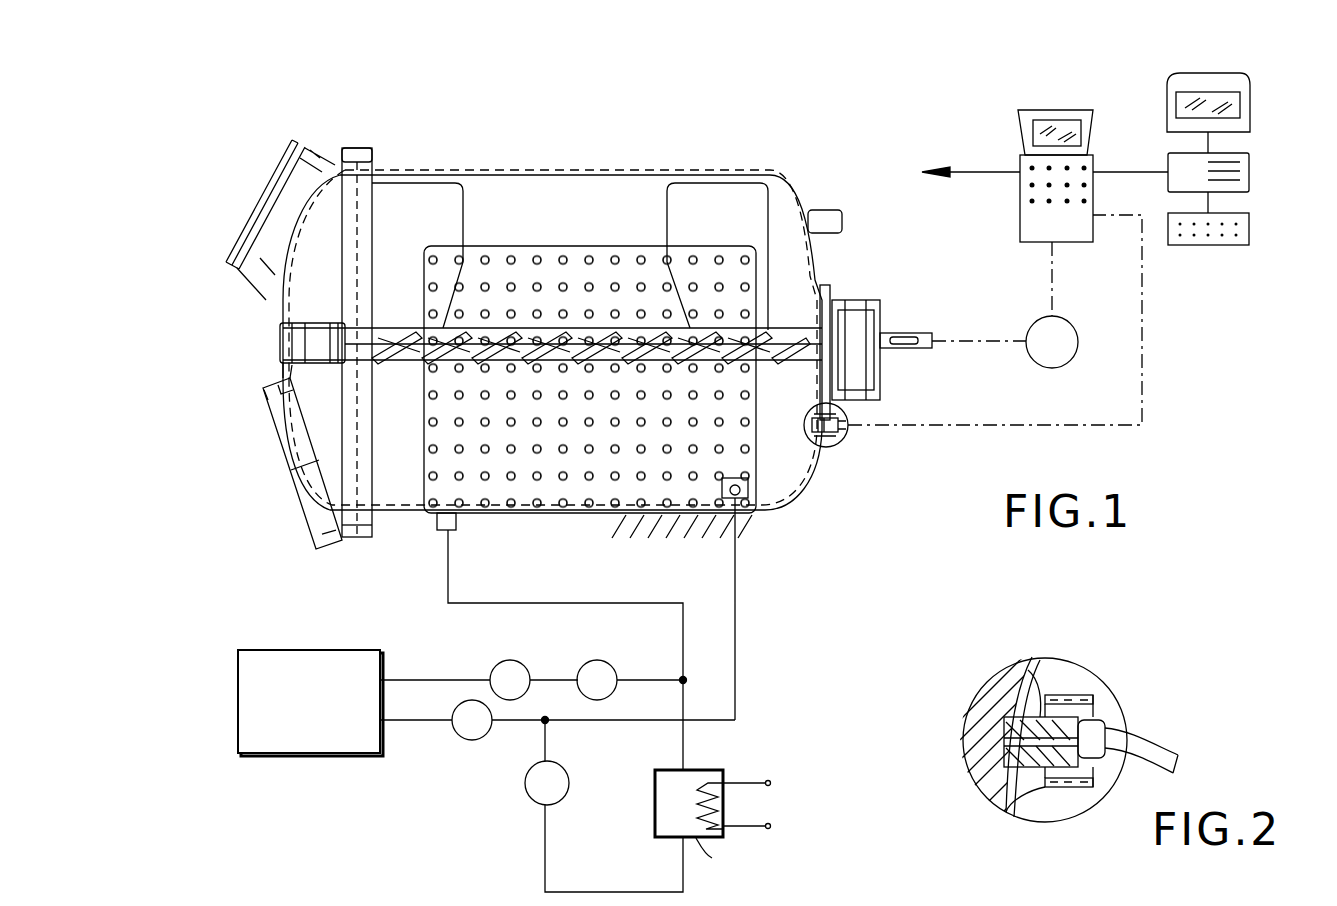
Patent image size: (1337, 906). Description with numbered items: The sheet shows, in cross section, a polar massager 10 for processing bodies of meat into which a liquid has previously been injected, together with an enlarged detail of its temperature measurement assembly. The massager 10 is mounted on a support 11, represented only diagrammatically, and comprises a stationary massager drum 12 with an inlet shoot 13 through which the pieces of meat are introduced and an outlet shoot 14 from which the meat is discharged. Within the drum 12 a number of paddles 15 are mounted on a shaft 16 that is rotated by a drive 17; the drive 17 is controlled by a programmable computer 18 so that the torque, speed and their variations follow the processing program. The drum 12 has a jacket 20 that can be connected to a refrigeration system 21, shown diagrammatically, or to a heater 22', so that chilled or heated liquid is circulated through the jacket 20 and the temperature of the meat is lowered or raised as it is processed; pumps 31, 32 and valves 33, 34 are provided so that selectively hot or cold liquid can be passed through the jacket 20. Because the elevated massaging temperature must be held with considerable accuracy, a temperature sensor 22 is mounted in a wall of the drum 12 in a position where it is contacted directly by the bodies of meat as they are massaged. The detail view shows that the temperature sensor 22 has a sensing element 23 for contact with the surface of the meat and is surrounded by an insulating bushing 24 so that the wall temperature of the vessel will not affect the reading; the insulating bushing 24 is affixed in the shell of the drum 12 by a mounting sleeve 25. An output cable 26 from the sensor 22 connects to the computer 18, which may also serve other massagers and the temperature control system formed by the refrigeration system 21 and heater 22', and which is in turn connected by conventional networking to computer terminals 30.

In FIG. 1, the polar massager 10 is at (397, 528).
In FIG. 1, the support 11 is at (660, 528).
In FIG. 1, the massager drum 12 is at (762, 512).
In FIG. 2, the massager drum 12 is at (993, 770).
In FIG. 1, the inlet shoot 13 is at (272, 247).
In FIG. 1, the outlet shoot 14 is at (302, 490).
In FIG. 1, the paddles 15 is at (688, 213).
In FIG. 1, the shaft 16 is at (812, 362).
In FIG. 1, the drive 17 is at (1030, 322).
In FIG. 1, the programmable computer 18 is at (1032, 240).
In FIG. 1, the jacket 20 is at (503, 503).
In FIG. 1, the refrigeration system 21 is at (283, 737).
In FIG. 1, the temperature sensor 22 is at (973, 372).
In FIG. 2, the temperature sensor 22 is at (1048, 794).
In FIG. 1, the heater 22' is at (726, 805).
In FIG. 2, the sensing element 23 is at (995, 712).
In FIG. 2, the insulating bushing 24 is at (1016, 805).
In FIG. 2, the mounting sleeve 25 is at (1040, 690).
In FIG. 2, the output cable 26 is at (1148, 740).
In FIG. 1, the computer terminals 30 is at (1275, 220).
In FIG. 1, the pump 31 is at (606, 661).
In FIG. 1, the pump 32 is at (535, 797).
In FIG. 1, the valve 33 is at (503, 661).
In FIG. 1, the valve 34 is at (470, 742).